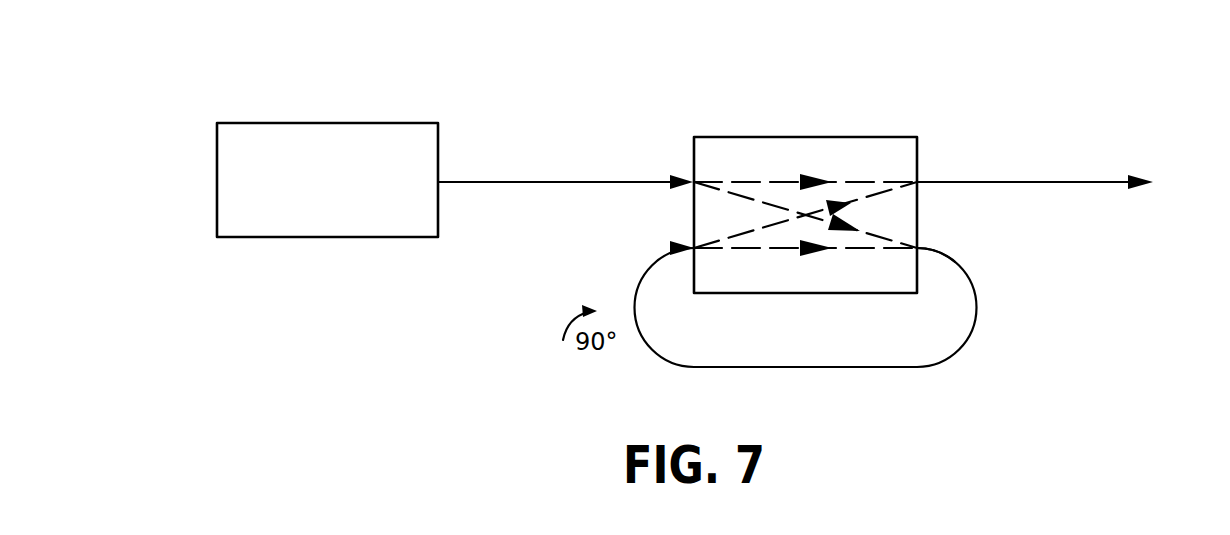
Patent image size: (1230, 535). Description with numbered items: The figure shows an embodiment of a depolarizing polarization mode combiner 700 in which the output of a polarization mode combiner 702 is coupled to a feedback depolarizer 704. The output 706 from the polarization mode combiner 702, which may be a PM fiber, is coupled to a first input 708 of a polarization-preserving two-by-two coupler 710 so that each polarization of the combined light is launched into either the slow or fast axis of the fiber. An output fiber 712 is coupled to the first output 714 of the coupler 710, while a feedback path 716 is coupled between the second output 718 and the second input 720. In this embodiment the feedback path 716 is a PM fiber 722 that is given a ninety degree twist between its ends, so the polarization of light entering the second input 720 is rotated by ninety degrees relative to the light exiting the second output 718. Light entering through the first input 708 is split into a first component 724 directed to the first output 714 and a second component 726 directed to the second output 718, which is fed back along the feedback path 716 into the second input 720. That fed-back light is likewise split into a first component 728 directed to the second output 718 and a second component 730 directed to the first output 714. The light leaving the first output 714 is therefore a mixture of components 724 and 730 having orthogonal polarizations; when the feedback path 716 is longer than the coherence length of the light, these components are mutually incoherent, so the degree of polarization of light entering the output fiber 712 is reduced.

The depolarizing polarization mode combiner 700 is at (958, 48).
The polarization mode combiner 702 is at (327, 123).
The feedback depolarizer 704 is at (857, 161).
The output 706 is at (553, 182).
The first input 708 is at (693, 177).
The polarization-preserving 2×2 coupler 710 is at (862, 157).
The output fiber 712 is at (1103, 182).
The first output 714 is at (917, 182).
The feedback path 716 is at (806, 338).
The second output 718 is at (920, 248).
The second input 720 is at (688, 244).
The PM fiber 722 is at (777, 367).
The first component 724 is at (771, 180).
The second component 726 is at (743, 195).
The first component 728 is at (788, 250).
The second component 730 is at (857, 194).